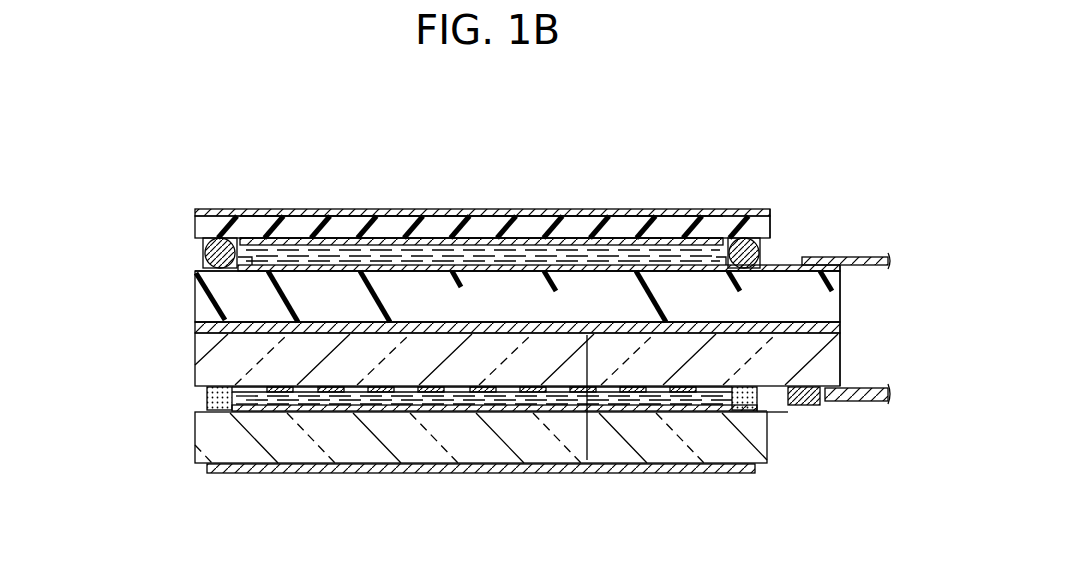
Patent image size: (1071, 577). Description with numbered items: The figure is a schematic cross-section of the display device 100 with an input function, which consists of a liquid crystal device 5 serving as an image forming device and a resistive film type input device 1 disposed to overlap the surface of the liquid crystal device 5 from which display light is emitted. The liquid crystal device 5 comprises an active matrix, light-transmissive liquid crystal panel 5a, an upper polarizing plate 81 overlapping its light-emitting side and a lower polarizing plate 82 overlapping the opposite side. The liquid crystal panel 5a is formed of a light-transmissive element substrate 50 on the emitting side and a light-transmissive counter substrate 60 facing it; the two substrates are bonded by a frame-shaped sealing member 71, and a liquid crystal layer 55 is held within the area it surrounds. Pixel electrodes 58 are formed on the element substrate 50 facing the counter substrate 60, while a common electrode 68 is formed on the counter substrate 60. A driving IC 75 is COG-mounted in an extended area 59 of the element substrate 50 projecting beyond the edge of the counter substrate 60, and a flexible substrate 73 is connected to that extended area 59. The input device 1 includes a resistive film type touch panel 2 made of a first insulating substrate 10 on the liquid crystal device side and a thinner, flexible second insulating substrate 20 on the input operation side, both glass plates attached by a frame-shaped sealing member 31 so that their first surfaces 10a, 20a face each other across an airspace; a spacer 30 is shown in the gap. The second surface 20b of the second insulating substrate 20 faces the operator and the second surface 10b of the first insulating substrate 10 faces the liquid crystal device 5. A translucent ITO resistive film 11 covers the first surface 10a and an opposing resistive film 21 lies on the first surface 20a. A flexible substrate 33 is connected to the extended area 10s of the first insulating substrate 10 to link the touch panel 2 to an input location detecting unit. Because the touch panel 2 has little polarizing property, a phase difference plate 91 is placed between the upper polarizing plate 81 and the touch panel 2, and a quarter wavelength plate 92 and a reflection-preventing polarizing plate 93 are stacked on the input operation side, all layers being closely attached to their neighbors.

The display device with an input function 100 is at (204, 161).
The resistive film type touch panel 2 is at (126, 182).
The second insulating substrate 20 is at (217, 232).
The first surface of the second insulating substrate 20a is at (515, 243).
The second surface of the second insulating substrate 20b is at (572, 213).
The resistive film 21 is at (622, 242).
The resistive film 11 is at (425, 258).
The sealing member 31 is at (236, 246).
The spacer 30 is at (221, 268).
The phase difference plate 91 is at (384, 323).
The 1/4 wavelength plate 92 is at (483, 208).
The polarizing plate on the touch panel side 93 is at (557, 207).
The first insulating substrate 10 is at (201, 297).
The first surface of the first insulating substrate 10a is at (298, 324).
The second surface of the first insulating substrate 10b is at (405, 326).
The extended area 10s is at (792, 242).
The resistive film type input device 1 is at (855, 242).
The flexible substrate 33 is at (872, 266).
The liquid crystal device 5 is at (124, 323).
The liquid crystal panel 5a is at (590, 373).
The upper polarizing plate 81 is at (207, 331).
The element substrate 50 is at (207, 355).
The pixel electrodes 58 is at (383, 392).
The liquid crystal layer 55 is at (561, 394).
The common electrode 68 is at (478, 412).
The sealing member 71 is at (752, 410).
The counter substrate 60 is at (207, 421).
The lower polarizing plate 82 is at (208, 471).
The driving IC 75 is at (811, 405).
The flexible substrate 73 is at (873, 403).
The extended area 59 is at (795, 420).